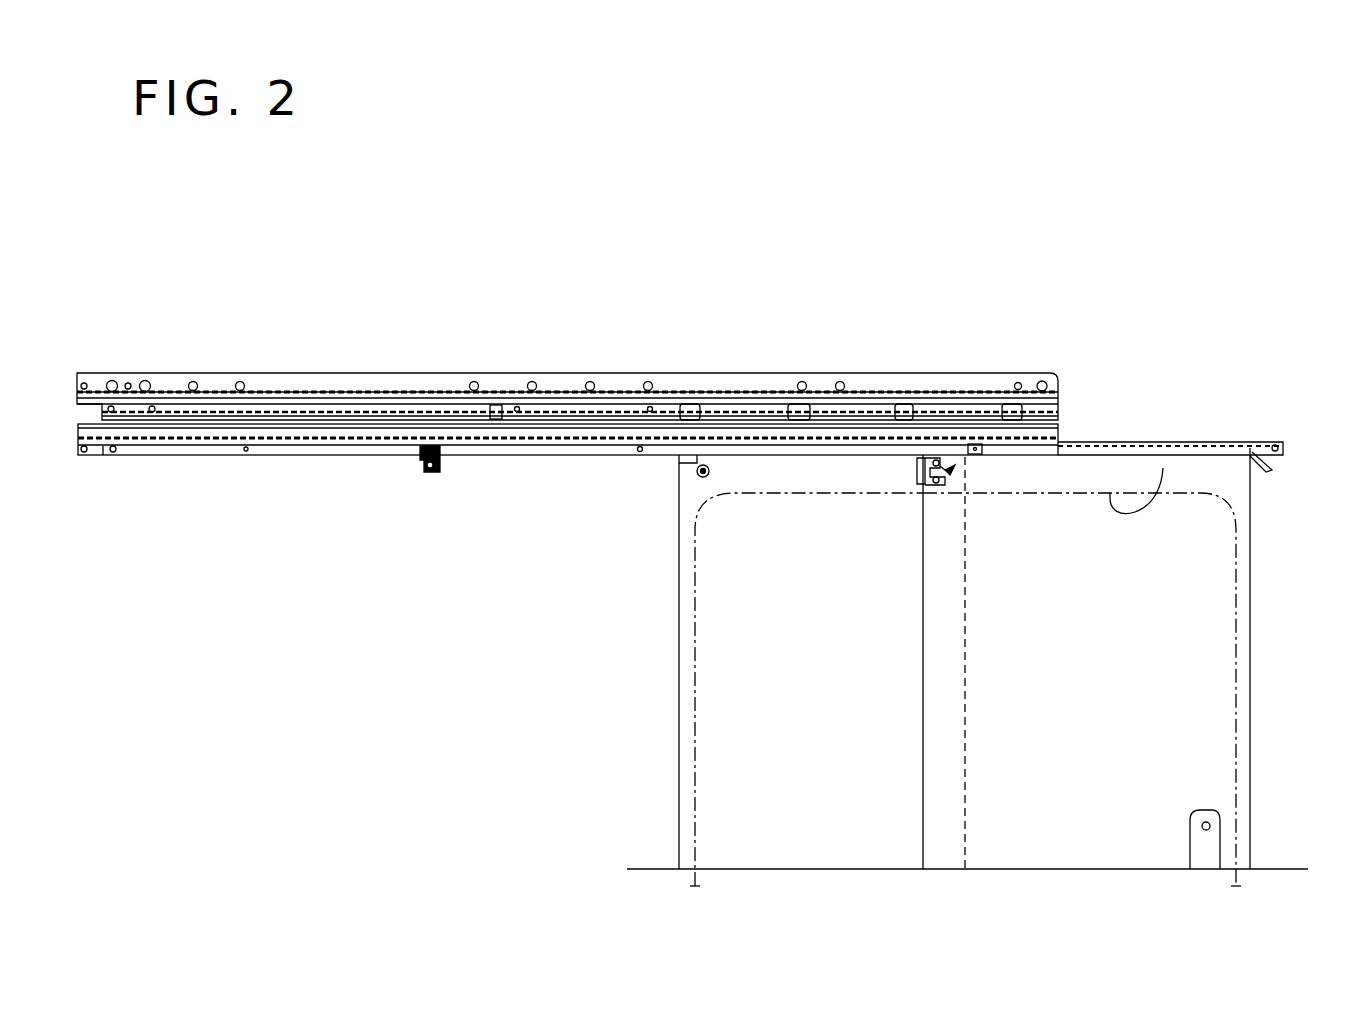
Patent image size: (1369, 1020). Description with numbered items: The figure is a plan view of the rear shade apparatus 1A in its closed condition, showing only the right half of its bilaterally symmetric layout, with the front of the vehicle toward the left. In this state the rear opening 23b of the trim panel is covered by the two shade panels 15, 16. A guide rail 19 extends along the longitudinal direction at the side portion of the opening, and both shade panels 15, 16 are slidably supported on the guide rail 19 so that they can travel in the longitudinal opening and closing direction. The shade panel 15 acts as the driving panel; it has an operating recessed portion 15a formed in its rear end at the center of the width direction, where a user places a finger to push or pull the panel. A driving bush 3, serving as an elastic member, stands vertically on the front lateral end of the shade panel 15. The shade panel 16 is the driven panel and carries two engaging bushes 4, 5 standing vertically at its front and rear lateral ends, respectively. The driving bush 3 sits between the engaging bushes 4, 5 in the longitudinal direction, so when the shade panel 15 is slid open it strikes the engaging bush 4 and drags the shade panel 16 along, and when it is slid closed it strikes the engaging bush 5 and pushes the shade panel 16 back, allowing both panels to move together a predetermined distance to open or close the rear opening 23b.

The rear shade apparatus 1A is at (1085, 340).
The driving bush 3 is at (920, 456).
The engaging bush 4 is at (700, 465).
The engaging bush 5 is at (950, 458).
The shade panel 15 is at (1195, 648).
The operating recessed portion 15a is at (1208, 853).
The shade panel 16 is at (727, 787).
The guide rail 19 is at (428, 385).
The rear opening 23b is at (1163, 470).